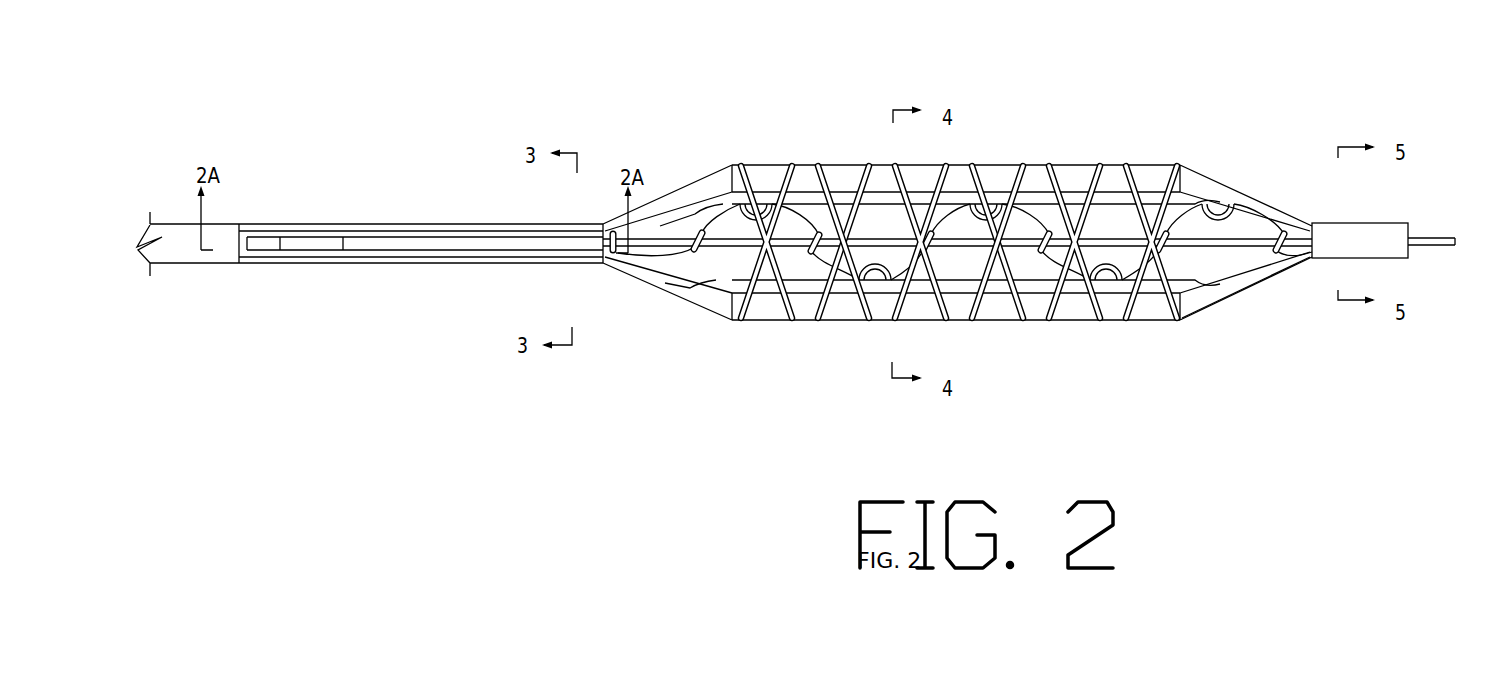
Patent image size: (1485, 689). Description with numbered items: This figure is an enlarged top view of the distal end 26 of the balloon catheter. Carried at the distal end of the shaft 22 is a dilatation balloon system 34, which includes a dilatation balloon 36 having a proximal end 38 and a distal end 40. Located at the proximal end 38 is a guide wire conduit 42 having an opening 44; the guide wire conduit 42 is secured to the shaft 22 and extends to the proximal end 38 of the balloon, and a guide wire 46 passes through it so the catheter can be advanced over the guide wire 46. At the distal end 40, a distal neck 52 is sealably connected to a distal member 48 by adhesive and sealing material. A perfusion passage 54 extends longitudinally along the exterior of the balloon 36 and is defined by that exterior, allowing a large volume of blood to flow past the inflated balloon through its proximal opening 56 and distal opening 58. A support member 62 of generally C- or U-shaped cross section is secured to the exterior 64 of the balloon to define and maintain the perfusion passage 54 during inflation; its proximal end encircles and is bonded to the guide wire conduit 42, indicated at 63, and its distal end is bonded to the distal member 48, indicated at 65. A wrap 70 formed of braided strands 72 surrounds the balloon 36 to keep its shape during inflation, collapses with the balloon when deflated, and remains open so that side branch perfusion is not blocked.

The shaft 22 is at (172, 224).
The distal end 26 is at (1188, 360).
The dilatation balloon system 34 is at (662, 69).
The dilatation balloon 36 is at (984, 157).
The proximal end 38 is at (669, 192).
The distal end 40 is at (1195, 172).
The guide wire conduit 42 is at (405, 250).
The opening 44 is at (293, 243).
The guide wire 46 is at (1430, 245).
The distal member 48 is at (1357, 223).
The distal neck 52 is at (1270, 280).
The perfusion passage 54 is at (672, 270).
The proximal opening 56 is at (680, 215).
The distal opening 58 is at (1180, 165).
The support member 62 is at (875, 283).
The proximal bond of support member 63 is at (611, 258).
The exterior of balloon 64 is at (1022, 207).
The distal bond of support member 65 is at (1312, 257).
The wrap 70 is at (820, 165).
The strands 72 is at (1107, 320).